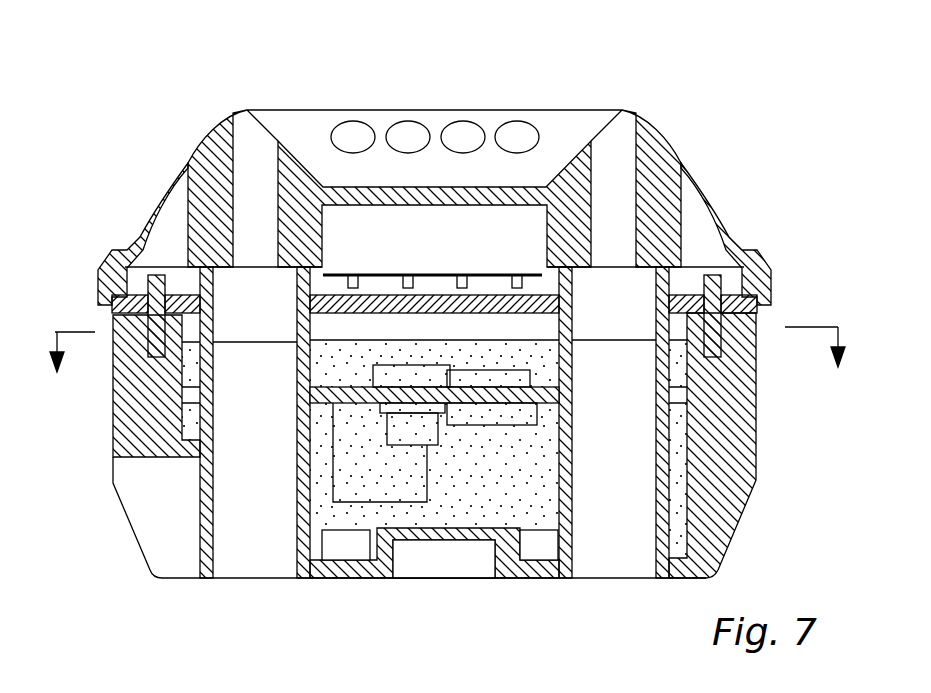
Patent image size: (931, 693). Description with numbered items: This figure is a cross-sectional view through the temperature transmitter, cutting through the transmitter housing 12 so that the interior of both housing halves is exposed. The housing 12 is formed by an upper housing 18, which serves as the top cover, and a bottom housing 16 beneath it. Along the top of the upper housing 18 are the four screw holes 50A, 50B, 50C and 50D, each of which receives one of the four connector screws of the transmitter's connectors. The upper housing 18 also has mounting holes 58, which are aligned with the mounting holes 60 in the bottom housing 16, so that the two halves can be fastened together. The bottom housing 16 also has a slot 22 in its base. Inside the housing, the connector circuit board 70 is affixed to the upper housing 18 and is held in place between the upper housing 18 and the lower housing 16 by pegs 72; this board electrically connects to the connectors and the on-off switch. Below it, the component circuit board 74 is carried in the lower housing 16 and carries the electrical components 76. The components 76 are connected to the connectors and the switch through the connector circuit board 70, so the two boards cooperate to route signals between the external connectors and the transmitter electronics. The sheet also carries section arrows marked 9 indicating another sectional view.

The dispensing device 12 is at (140, 185).
The cover dome 18 is at (133, 238).
The passages 58 is at (247, 127).
The outlet opening A 50A is at (517, 128).
The outlet opening B 50B is at (463, 130).
The outlet opening C 50C is at (408, 128).
The outlet opening D 50D is at (348, 128).
The upper plate 70 is at (303, 348).
The retaining clips 72 is at (152, 328).
The lower plate 74 is at (300, 427).
The electronic components 76 is at (405, 483).
The housing base 16 is at (748, 424).
The sleeves 60 is at (228, 567).
The battery 22 is at (462, 572).
The section line 9- 9 is at (457, 355).